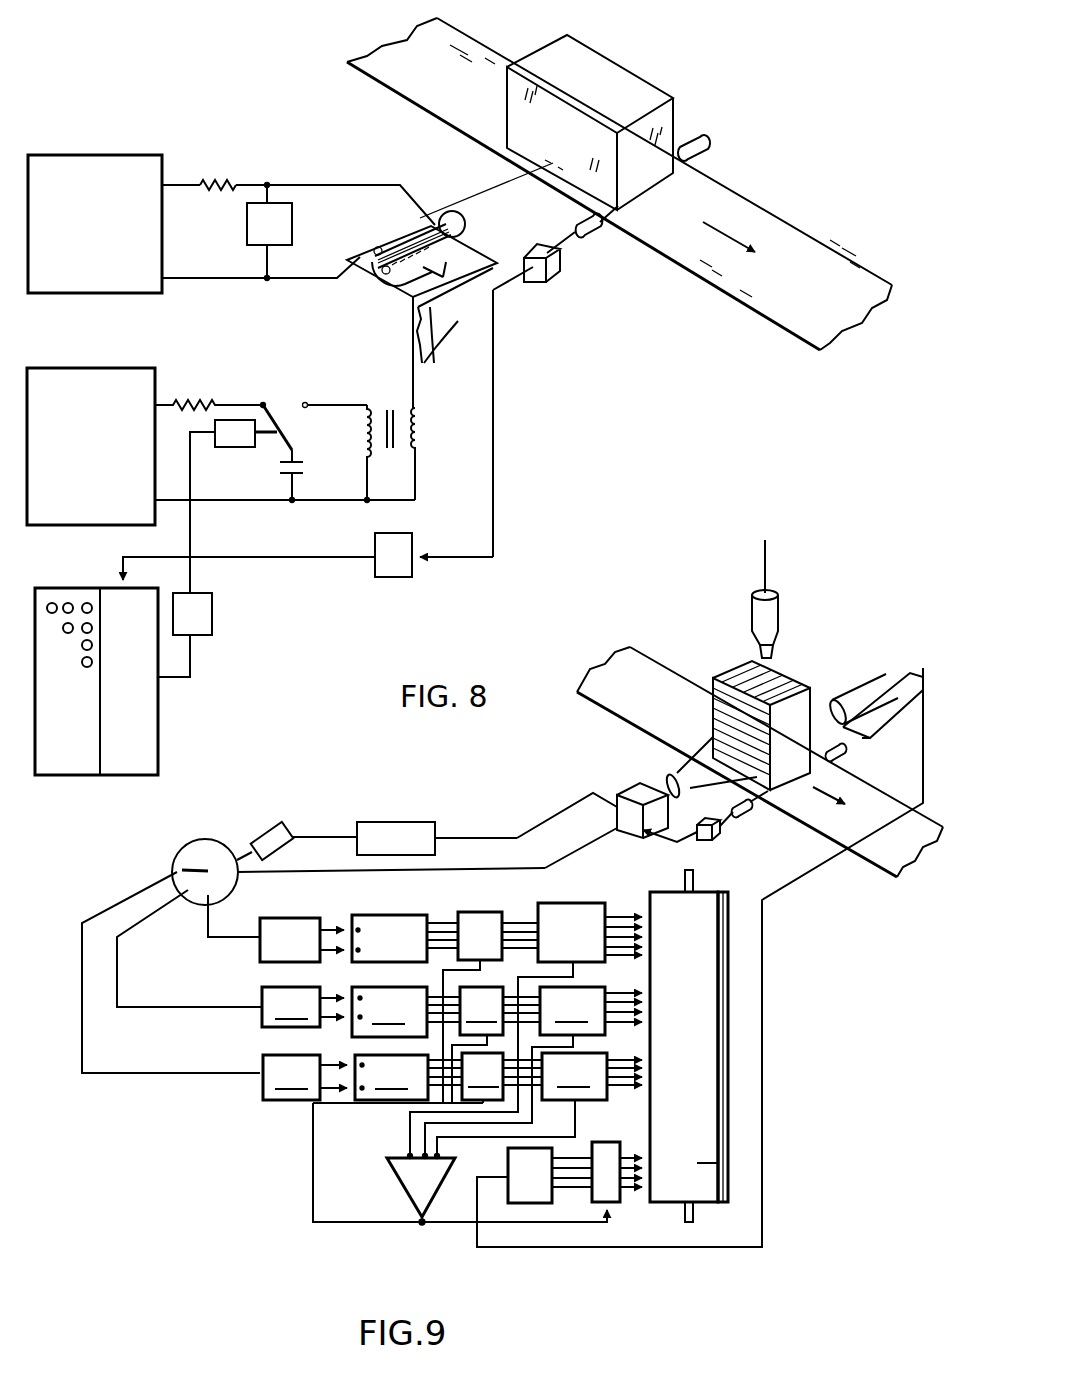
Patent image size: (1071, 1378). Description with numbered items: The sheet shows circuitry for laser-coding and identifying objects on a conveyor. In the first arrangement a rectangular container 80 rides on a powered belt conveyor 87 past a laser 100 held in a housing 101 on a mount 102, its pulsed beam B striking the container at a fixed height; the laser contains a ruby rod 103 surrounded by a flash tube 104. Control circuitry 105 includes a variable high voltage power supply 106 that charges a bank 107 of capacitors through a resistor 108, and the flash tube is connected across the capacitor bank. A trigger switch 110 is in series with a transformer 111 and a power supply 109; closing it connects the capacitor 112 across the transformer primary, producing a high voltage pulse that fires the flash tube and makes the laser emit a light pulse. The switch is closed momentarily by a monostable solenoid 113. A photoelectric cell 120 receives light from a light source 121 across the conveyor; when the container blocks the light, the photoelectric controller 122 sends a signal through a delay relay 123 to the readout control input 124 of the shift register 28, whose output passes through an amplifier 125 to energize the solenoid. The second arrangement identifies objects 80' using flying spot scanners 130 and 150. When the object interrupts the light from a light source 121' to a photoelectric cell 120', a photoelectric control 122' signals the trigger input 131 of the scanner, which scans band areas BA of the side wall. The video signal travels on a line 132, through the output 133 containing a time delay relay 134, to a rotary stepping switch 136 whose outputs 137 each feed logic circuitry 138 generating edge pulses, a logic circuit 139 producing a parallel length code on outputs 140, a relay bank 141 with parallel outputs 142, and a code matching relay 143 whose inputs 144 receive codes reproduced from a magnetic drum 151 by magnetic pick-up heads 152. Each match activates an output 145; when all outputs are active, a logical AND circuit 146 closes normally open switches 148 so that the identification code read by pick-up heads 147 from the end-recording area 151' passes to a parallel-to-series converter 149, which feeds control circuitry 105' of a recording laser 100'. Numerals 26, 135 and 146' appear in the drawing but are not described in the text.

In FIG. 8, the variable high voltage power supply 106 is at (110, 140).
In FIG. 8, the resistor 108 is at (205, 178).
In FIG. 8, the bank of capacitors 107 is at (288, 221).
In FIG. 8, the power supply 109 is at (78, 378).
In FIG. 8, the monostable solenoid 113 is at (239, 420).
In FIG. 8, the trigger switch 110 is at (280, 400).
In FIG. 8, the capacitor 112 is at (303, 466).
In FIG. 8, the transformer 111 is at (410, 456).
In FIG. 8, the trigger or readout control input 124 is at (120, 582).
In FIG. 8, the amplifier 125 is at (202, 612).
In FIG. 8, the delay relay 123 is at (412, 570).
In FIG. 8, the control circuitry 105 is at (329, 628).
In FIG. 8, the parallel-to-series converter or shift register 28 is at (153, 736).
In FIG. 8, the control unit 26 is at (58, 763).
In FIG. 8, the laser 100 is at (329, 371).
In FIG. 8, the housing 101 is at (452, 219).
In FIG. 8, the ruby rod 103 is at (456, 224).
In FIG. 8, the flash tube 104 is at (458, 230).
In FIG. 8, the mount 102 is at (440, 325).
In FIG. 8, the photoelectric controller 122 is at (544, 267).
In FIG. 8, the photoelectric cell 120 is at (607, 236).
In FIG. 8, the light source 121 is at (712, 144).
In FIG. 8, the container 80 is at (590, 121).
In FIG. 8, the powered belt conveyor 87 is at (767, 212).
In FIG. 9, the powered belt conveyor 87 is at (646, 666).
In FIG. 8, the pulsed beam B is at (506, 192).
In FIG. 9, the object 80' is at (763, 706).
In FIG. 9, the band areas BA is at (715, 705).
In FIG. 9, the flying spot scanner 150 is at (769, 596).
In FIG. 9, the recording laser 100' is at (875, 692).
In FIG. 9, the control circuitry 105' is at (702, 925).
In FIG. 9, the light source 121' is at (863, 750).
In FIG. 9, the flying spot scanner 130 is at (648, 792).
In FIG. 9, the line 132 is at (567, 830).
In FIG. 9, the trigger input 131 is at (648, 834).
In FIG. 9, the photoelectric control 122' is at (727, 839).
In FIG. 9, the photoelectric cell 120' is at (764, 814).
In FIG. 9, the output 133 is at (484, 840).
In FIG. 9, the time delay relay 134 is at (391, 824).
In FIG. 9, the mirror 135 is at (286, 826).
In FIG. 9, the rotary stepping switch 136 is at (192, 838).
In FIG. 9, the outputs 137 is at (140, 890).
In FIG. 9, the logic circuitry 138 is at (293, 920).
In FIG. 9, the logic circuit 139 is at (381, 918).
In FIG. 9, the outputs 140 is at (442, 922).
In FIG. 9, the relay bank 141 is at (487, 914).
In FIG. 9, the parallel outputs 142 is at (520, 924).
In FIG. 9, the code matching relay 143 is at (580, 906).
In FIG. 9, the inputs 144 is at (620, 922).
In FIG. 9, the output 145 is at (580, 975).
In FIG. 9, the magnetic pick-up heads 152 is at (644, 1059).
In FIG. 9, the magnetic drum 151 is at (728, 1046).
In FIG. 9, the end-recording area 151' is at (755, 1163).
In FIG. 9, the logical AND circuit 146 is at (460, 1092).
In FIG. 9, the output line 146' is at (440, 1240).
In FIG. 9, the pick-up heads 147 is at (642, 1202).
In FIG. 9, the normally open switches 148 is at (606, 1152).
In FIG. 9, the parallel-to-series converter 149 is at (510, 1166).